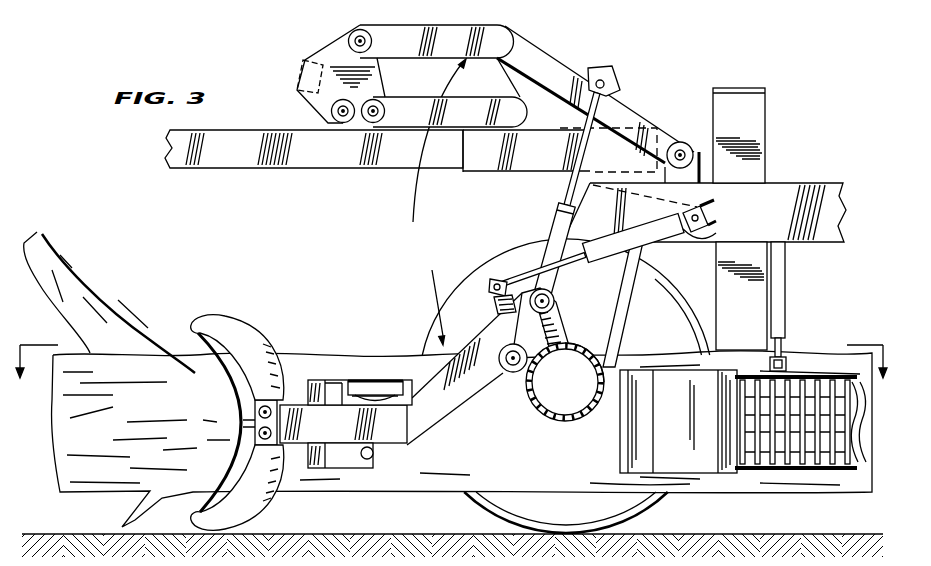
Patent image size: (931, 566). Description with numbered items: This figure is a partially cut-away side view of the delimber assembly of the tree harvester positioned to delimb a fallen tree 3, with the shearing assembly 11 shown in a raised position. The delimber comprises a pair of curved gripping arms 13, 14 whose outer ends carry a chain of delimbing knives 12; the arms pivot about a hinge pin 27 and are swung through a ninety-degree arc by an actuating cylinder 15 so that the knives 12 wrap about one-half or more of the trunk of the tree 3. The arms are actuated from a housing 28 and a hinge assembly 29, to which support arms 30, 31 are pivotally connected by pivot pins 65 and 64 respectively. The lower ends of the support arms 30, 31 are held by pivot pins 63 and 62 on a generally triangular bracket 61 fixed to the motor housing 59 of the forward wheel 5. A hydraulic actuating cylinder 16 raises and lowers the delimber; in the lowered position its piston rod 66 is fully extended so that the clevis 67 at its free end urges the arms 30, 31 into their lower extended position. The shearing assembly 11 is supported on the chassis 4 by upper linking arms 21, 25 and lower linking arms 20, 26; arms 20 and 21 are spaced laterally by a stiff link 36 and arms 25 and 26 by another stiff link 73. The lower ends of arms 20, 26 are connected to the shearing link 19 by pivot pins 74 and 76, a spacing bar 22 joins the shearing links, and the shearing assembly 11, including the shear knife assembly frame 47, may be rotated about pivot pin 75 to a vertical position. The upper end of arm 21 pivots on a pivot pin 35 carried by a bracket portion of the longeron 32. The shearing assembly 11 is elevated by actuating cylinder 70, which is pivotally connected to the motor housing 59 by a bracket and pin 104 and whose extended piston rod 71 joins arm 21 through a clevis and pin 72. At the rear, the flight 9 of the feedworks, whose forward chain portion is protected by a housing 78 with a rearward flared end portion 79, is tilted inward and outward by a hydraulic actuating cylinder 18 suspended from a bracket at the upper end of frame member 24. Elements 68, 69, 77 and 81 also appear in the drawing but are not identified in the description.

The tree 3 is at (296, 356).
The chassis 4 is at (826, 164).
The forward wheel 5 is at (655, 500).
The flight 9 is at (800, 470).
The shearing assembly 11 is at (502, 173).
The delimbing knives 12 is at (240, 442).
The curved gripping arm 13 is at (245, 318).
The curved gripping arm 14 is at (272, 503).
The actuating cylinder 15 is at (385, 380).
The hydraulic actuating cylinder 16 is at (661, 240).
The hydraulic actuating cylinder 18 is at (786, 280).
The shearing link 19 is at (334, 41).
The lower linking arm 20 is at (490, 58).
The upper linking arm 21 is at (646, 118).
The spacing bar 22 is at (302, 78).
The frame member 24 is at (766, 120).
The upper linking arm 25 is at (545, 148).
The lower linking arm 26 is at (432, 95).
The hinge pin 27 is at (322, 380).
The housing 28 is at (408, 428).
The hinge assembly 29 is at (348, 470).
The support arm 30 is at (475, 338).
The support arm 31 is at (477, 396).
The longeron 32 is at (845, 218).
The pivot pin 35 is at (683, 143).
The stiff link 36 is at (513, 26).
The shear knife assembly frame 47 is at (358, 168).
The motor housing 59 is at (557, 420).
The bracket 61 is at (562, 343).
The pivot pin 62 is at (513, 366).
The pivot pin 63 is at (550, 302).
The pivot pin 64 is at (374, 456).
The pivot pin 65 is at (393, 398).
The piston rod 66 is at (520, 277).
The clevis 67 is at (494, 282).
The bracket 68 is at (489, 289).
The lever 69 is at (516, 318).
The actuating cylinder 70 is at (553, 228).
The piston rod 71 is at (569, 186).
The clevis and pin 72 is at (607, 97).
The stiff link 73 is at (527, 76).
The pivot pin 74 is at (372, 41).
The pivot pin 75 is at (331, 112).
The pivot pin 76 is at (385, 111).
The strut 77 is at (629, 304).
The housing 78 is at (671, 456).
The rearward flared end portion 79 is at (735, 408).
The clamp pad 81 is at (358, 380).
The bracket and pin 104 is at (565, 382).